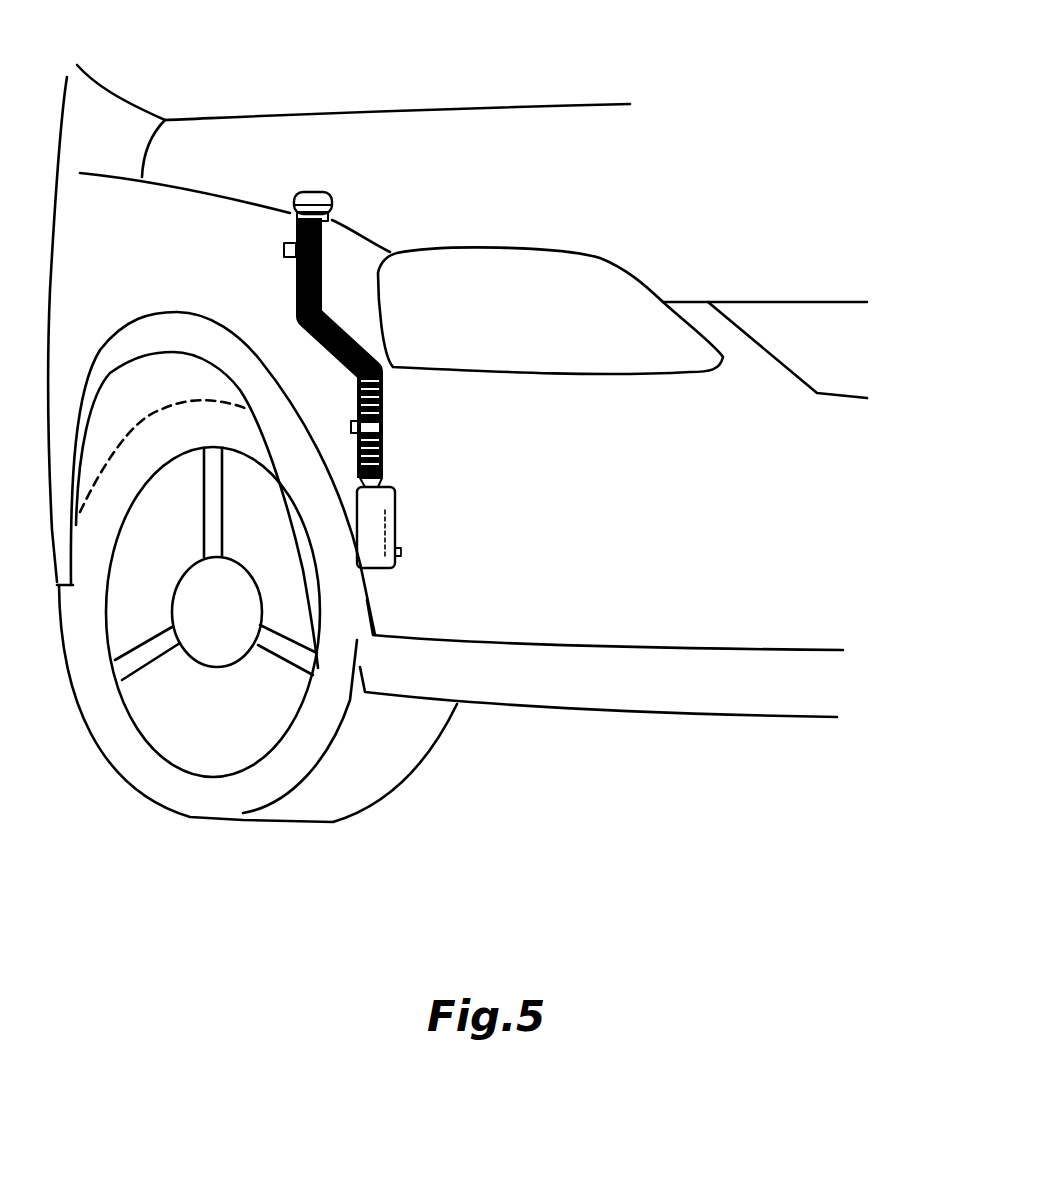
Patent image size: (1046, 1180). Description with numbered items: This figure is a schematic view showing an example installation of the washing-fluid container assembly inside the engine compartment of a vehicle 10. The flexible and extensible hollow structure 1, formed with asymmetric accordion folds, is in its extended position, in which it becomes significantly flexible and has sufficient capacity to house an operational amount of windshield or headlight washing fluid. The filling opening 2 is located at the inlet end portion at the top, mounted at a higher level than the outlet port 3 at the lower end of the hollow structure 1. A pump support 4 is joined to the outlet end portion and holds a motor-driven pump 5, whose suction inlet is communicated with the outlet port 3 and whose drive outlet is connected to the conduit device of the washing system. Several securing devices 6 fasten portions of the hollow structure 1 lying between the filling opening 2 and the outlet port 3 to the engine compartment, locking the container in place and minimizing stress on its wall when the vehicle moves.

The hollow structure 1 is at (288, 323).
The filling opening 2 is at (327, 213).
The outlet port 3 is at (381, 479).
The pump support 4 is at (383, 503).
The motor-driven pump 5 is at (403, 538).
The securing devices 6 is at (287, 253).
The vehicle body 10 is at (312, 193).